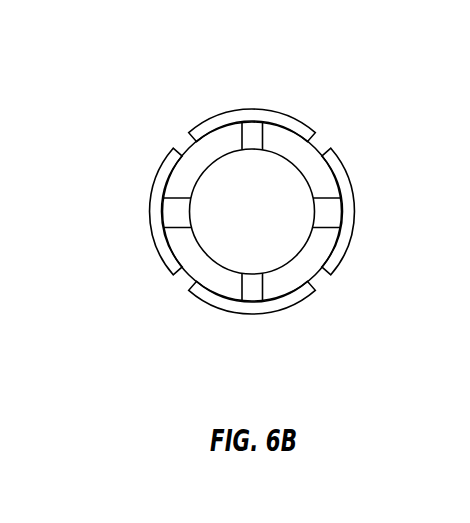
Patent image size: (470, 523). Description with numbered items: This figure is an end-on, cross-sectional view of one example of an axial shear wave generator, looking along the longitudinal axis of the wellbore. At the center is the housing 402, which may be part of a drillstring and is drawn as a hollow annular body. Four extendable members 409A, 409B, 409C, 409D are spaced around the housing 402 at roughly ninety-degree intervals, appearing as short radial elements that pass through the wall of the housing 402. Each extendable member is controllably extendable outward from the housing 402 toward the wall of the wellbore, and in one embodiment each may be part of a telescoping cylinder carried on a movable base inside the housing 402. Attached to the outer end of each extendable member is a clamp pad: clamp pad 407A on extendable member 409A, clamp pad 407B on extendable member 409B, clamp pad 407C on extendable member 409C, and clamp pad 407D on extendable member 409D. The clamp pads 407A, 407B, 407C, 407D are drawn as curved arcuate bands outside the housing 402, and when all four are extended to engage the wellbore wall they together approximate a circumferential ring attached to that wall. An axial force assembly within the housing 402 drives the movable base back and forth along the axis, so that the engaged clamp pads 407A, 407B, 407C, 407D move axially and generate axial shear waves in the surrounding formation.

The housing 402 is at (305, 245).
The clamp pad 407A is at (355, 208).
The clamp pad 407B is at (262, 109).
The clamp pad 407C is at (152, 215).
The clamp pad 407D is at (248, 316).
The extendable member 409A is at (330, 196).
The extendable member 409B is at (240, 138).
The extendable member 409C is at (175, 231).
The extendable member 409D is at (264, 293).